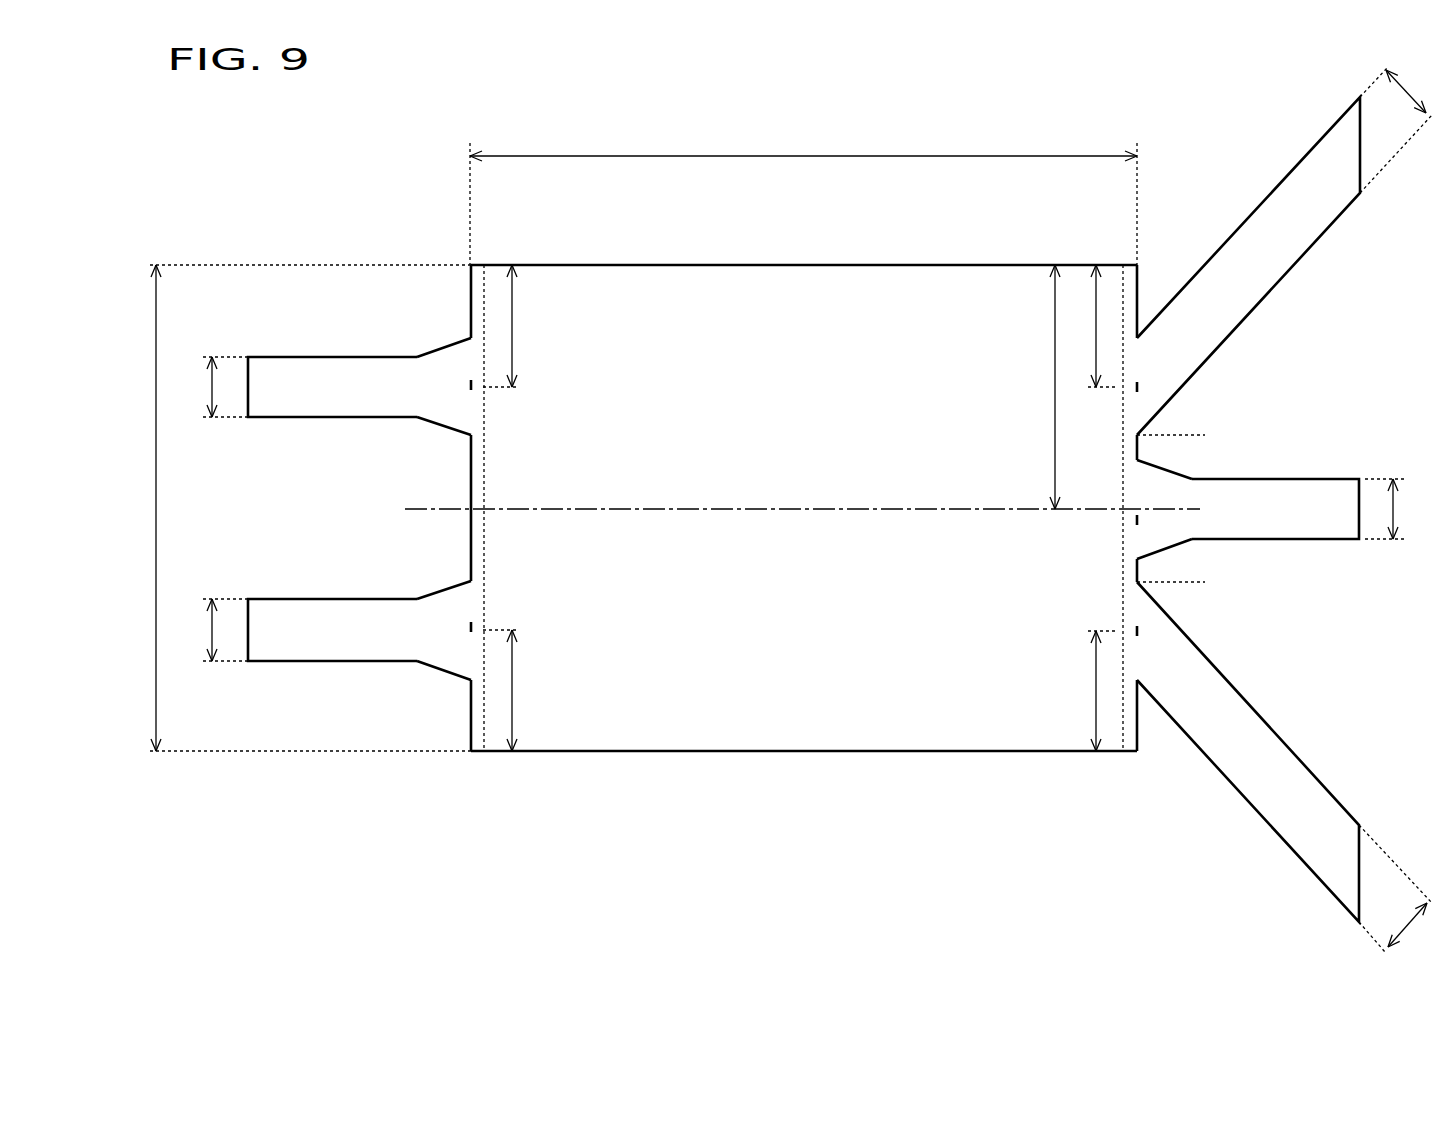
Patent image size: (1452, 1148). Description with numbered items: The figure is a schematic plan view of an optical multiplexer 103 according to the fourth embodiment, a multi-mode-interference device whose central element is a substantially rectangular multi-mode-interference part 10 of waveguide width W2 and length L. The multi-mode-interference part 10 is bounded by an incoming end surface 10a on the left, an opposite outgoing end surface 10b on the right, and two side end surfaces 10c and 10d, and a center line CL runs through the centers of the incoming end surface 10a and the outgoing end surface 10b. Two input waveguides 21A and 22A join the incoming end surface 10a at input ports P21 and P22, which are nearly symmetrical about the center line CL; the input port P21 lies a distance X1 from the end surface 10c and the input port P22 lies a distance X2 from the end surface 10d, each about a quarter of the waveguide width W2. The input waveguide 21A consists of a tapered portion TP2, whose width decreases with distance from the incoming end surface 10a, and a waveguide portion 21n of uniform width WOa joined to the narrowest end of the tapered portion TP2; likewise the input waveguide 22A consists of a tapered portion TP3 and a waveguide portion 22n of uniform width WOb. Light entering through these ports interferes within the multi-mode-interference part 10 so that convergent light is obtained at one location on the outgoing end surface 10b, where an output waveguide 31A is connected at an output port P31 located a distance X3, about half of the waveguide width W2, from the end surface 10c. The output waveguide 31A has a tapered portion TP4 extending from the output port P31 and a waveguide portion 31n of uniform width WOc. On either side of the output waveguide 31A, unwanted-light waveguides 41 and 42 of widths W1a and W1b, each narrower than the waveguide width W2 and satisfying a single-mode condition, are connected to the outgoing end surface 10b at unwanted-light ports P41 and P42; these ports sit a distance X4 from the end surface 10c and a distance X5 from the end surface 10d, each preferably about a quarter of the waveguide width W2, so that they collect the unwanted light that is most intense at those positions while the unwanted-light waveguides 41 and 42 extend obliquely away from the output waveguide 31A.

The optical multiplexer 103 is at (384, 156).
The multi-mode-interference part 10 is at (674, 330).
The incoming end surface 10a is at (481, 467).
The outgoing end surface 10b is at (1122, 543).
The end surface 10c is at (810, 262).
The end surface 10d is at (808, 756).
The input waveguide 21A is at (430, 313).
The waveguide portion 21n is at (325, 375).
The tapered portion TP2 is at (452, 370).
The input port P21 is at (468, 386).
The input waveguide 22A is at (430, 705).
The waveguide portion 22n is at (325, 645).
The tapered portion TP3 is at (450, 648).
The input port P22 is at (468, 626).
The output waveguide 31A is at (1347, 425).
The waveguide portion 31n is at (1320, 500).
The tapered portion TP4 is at (1168, 497).
The output port P31 is at (1140, 520).
The unwanted-light waveguide 41 is at (1232, 262).
The unwanted-light port P41 is at (1140, 387).
The unwanted-light waveguide 42 is at (1215, 742).
The unwanted-light port P42 is at (1140, 631).
The length of main body L is at (803, 194).
The waveguide width W2 is at (295, 508).
The waveguide width WOa is at (206, 387).
The waveguide width WOb is at (206, 630).
The waveguide width WOc is at (1404, 509).
The waveguide width W1a is at (1402, 127).
The waveguide width W1b is at (1402, 893).
The distance X1 is at (514, 326).
The distance X2 is at (514, 690).
The distance X3 is at (1040, 387).
The distance X4 is at (1091, 326).
The distance X5 is at (1091, 691).
The center line CL is at (415, 518).